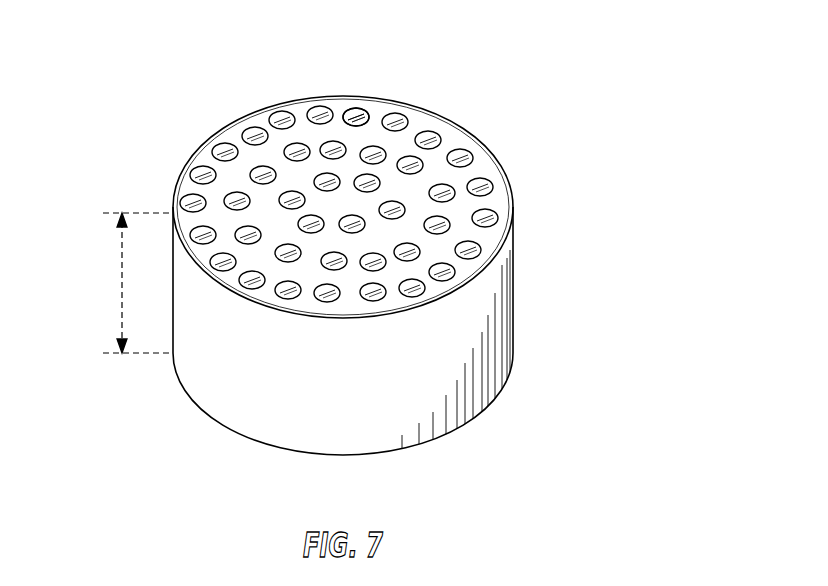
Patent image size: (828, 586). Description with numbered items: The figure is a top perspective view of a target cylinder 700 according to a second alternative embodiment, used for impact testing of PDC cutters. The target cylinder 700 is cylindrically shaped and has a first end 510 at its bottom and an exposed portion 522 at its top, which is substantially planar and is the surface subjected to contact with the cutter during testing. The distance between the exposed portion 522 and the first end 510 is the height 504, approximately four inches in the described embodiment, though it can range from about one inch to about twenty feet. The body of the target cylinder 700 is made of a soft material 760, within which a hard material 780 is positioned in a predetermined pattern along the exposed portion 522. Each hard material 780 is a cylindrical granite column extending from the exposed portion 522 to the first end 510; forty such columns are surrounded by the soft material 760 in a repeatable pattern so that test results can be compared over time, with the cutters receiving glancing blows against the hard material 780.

The target cylinder 700 is at (603, 55).
The first end 510 is at (425, 440).
The soft material 760 is at (457, 230).
The hard material 780 is at (494, 187).
The exposed portion 522 is at (373, 128).
The height 504 is at (122, 285).